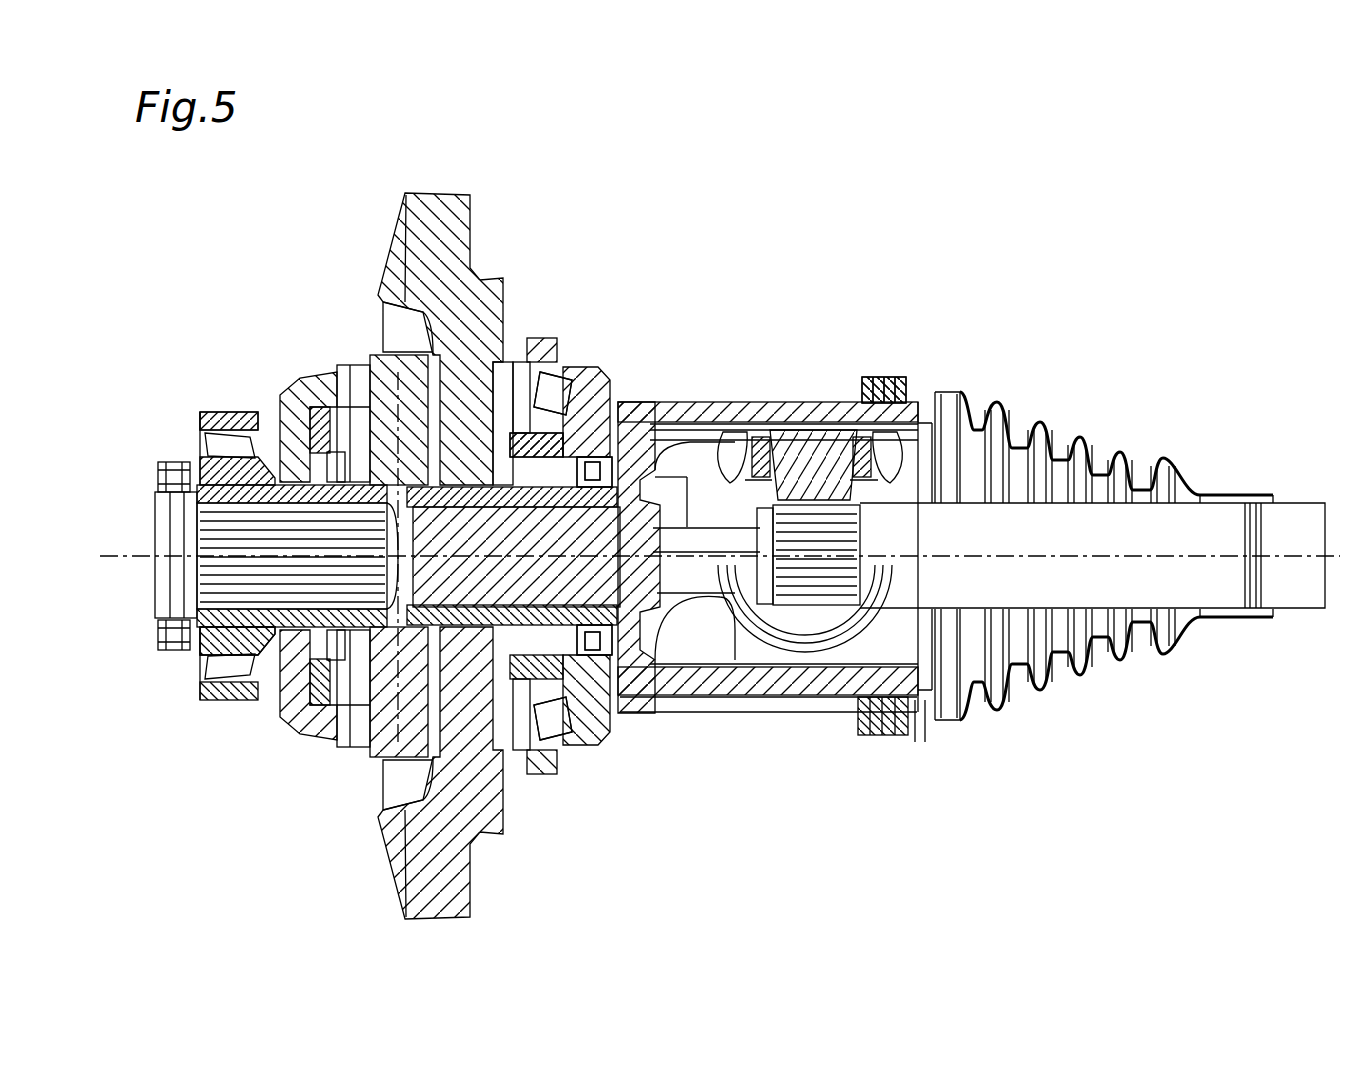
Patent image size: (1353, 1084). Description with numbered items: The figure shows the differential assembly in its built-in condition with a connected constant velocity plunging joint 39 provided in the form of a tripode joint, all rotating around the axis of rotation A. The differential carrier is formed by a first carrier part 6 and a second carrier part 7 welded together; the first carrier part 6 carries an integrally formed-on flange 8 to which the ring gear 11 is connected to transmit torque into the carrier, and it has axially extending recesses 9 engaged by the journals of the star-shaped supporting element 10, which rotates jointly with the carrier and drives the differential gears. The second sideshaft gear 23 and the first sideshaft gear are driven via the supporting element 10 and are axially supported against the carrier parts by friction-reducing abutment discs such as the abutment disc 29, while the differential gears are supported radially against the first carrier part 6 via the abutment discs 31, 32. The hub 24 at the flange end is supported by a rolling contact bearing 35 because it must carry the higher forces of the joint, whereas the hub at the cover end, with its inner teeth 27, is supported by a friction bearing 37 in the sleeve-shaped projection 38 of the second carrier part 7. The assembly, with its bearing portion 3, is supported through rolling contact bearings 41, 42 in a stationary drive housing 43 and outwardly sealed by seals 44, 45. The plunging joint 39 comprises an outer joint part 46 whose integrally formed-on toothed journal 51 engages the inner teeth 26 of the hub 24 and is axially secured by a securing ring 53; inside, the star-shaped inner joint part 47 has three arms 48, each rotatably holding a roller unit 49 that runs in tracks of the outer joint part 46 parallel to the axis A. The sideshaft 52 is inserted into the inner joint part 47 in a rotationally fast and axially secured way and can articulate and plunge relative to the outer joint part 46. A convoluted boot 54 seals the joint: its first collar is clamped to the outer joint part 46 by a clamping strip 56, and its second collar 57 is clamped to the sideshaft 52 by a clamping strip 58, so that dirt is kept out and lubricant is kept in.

The bearing portion 3 is at (600, 375).
The first carrier part 6 is at (528, 355).
The second carrier part 7 is at (290, 395).
The flange 8 is at (515, 300).
The recesses 9 is at (392, 752).
The supporting element 10 is at (372, 345).
The ring gear 11 is at (458, 215).
The second sideshaft gear 23 is at (318, 695).
The hub 24 is at (656, 595).
The inner teeth 26 is at (667, 497).
The inner teeth 27 is at (187, 523).
The abutment disc 29 is at (285, 690).
The abutment disc 31 is at (623, 412).
The abutment disc 32 is at (350, 368).
The rolling contact bearing 35 is at (928, 705).
The friction bearing 37 is at (200, 645).
The sleeve-shaped projection 38 is at (247, 455).
The constant velocity plunging joint 39 is at (708, 380).
The rolling contact bearing 41 is at (572, 355).
The rolling contact bearing 42 is at (205, 415).
The stationary drive housing 43 is at (600, 728).
The seal 44 is at (612, 700).
The seal 45 is at (165, 468).
The outer joint part 46 is at (748, 410).
The inner joint part 47 is at (760, 492).
The arms 48 is at (808, 455).
The roller unit 49 is at (760, 645).
The journal 51 is at (555, 745).
The sideshaft 52 is at (1062, 515).
The securing ring 53 is at (348, 652).
The convoluted boot 54 is at (1003, 415).
The clamping strip 56 is at (885, 375).
The second collar 57 is at (1223, 622).
The clamping strip 58 is at (1250, 500).
The axis of rotation A is at (1185, 553).